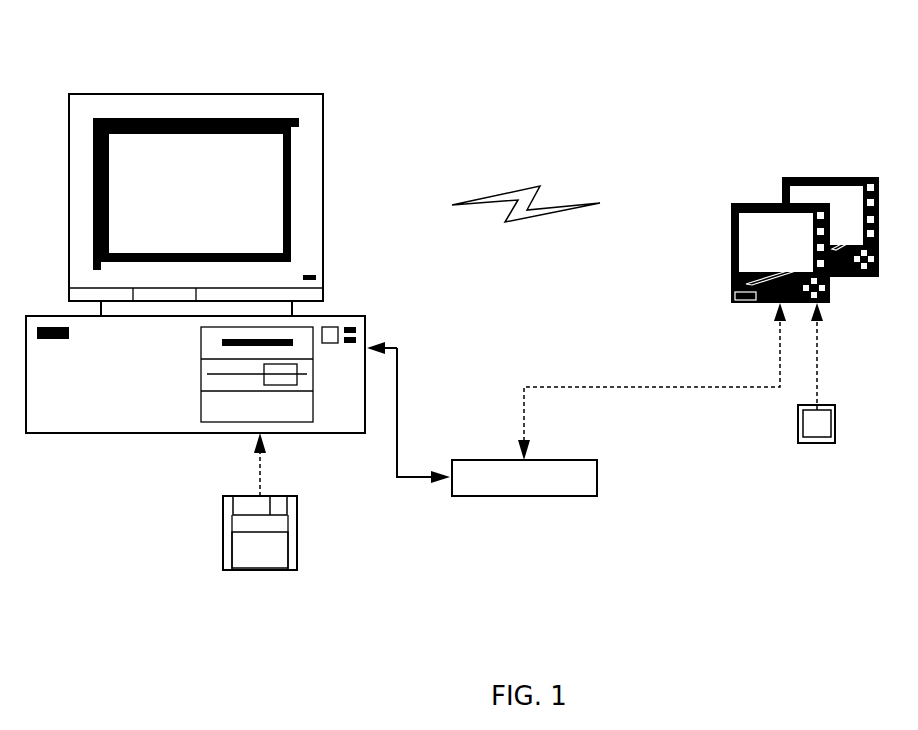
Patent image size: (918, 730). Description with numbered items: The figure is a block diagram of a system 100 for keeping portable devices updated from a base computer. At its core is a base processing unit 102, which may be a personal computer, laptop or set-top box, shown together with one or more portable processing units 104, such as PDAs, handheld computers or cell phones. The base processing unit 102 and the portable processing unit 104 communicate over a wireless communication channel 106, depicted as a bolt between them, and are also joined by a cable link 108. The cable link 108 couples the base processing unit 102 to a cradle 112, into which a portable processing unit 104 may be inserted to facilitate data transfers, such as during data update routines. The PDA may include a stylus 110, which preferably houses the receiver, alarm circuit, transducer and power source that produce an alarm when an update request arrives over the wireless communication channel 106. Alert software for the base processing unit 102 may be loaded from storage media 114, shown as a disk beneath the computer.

The system 100 is at (667, 31).
The base processing unit 102 is at (195, 249).
The portable processing unit 104 is at (805, 227).
The wireless communication channel 106 is at (526, 191).
The cable link 108 is at (408, 412).
The stylus 110 is at (752, 323).
The cradle 112 is at (616, 409).
The storage media 114 is at (260, 515).